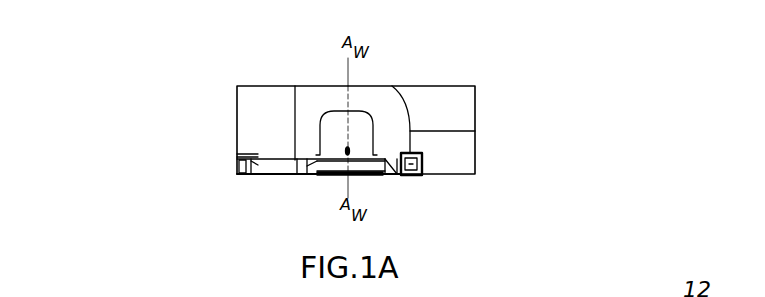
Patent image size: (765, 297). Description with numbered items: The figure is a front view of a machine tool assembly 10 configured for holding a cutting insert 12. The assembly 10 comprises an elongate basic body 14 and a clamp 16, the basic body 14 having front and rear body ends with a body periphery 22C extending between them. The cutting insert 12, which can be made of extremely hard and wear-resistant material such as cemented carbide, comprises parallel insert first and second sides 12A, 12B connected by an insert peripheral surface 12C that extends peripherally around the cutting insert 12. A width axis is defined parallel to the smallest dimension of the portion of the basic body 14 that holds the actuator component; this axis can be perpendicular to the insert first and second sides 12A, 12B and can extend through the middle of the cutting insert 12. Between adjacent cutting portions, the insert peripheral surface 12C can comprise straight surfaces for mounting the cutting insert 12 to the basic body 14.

The machine tool assembly 10 is at (503, 66).
The cutting insert 12 is at (420, 178).
The insert first side 12A is at (283, 157).
The insert second side 12B is at (280, 173).
The insert peripheral surface 12C is at (265, 158).
The basic body 14 is at (480, 135).
The clamp 16 is at (360, 146).
The body periphery 22C is at (265, 80).